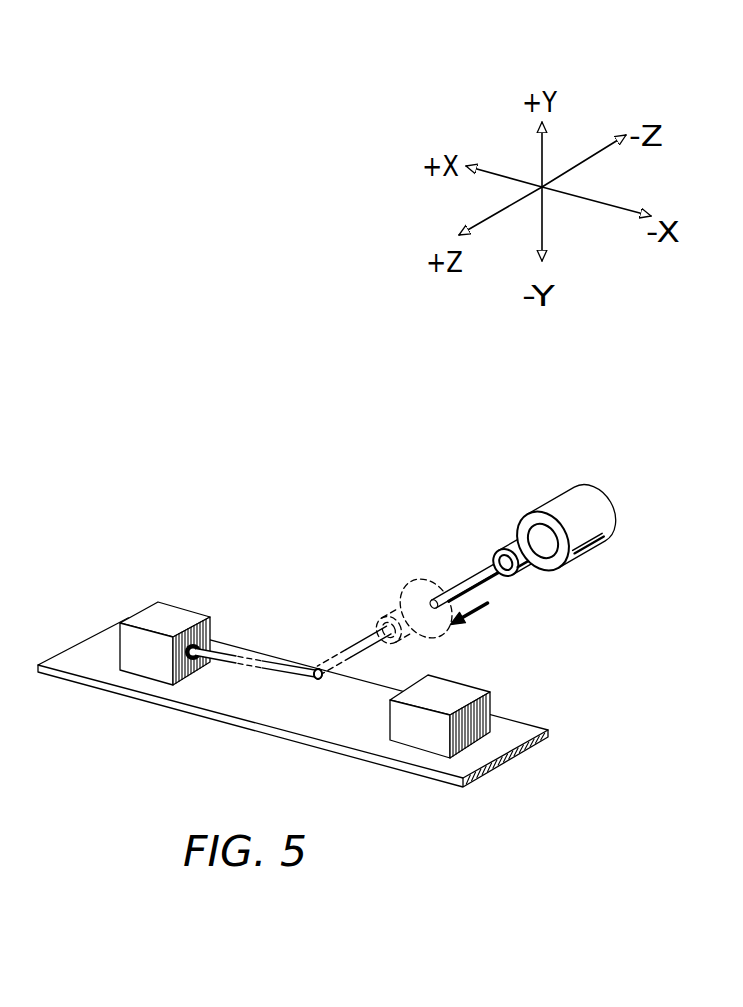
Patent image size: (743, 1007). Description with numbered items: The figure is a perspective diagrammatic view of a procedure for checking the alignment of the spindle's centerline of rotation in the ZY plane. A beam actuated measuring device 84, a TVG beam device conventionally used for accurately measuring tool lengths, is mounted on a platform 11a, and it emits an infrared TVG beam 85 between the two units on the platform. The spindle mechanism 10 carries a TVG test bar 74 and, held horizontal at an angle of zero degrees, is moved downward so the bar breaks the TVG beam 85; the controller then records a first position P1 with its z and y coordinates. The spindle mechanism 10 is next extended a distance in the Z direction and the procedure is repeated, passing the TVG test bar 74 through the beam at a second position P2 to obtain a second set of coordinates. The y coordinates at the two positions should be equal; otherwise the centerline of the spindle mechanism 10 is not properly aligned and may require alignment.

The spindle mechanism 10 is at (575, 489).
The TVG test bar 74 is at (468, 577).
The beam actuated measuring device 84 is at (482, 692).
The infrared TVG beam 85 is at (333, 688).
The platform 11a is at (337, 753).
The first position P1 is at (320, 670).
The second position P2 is at (343, 657).